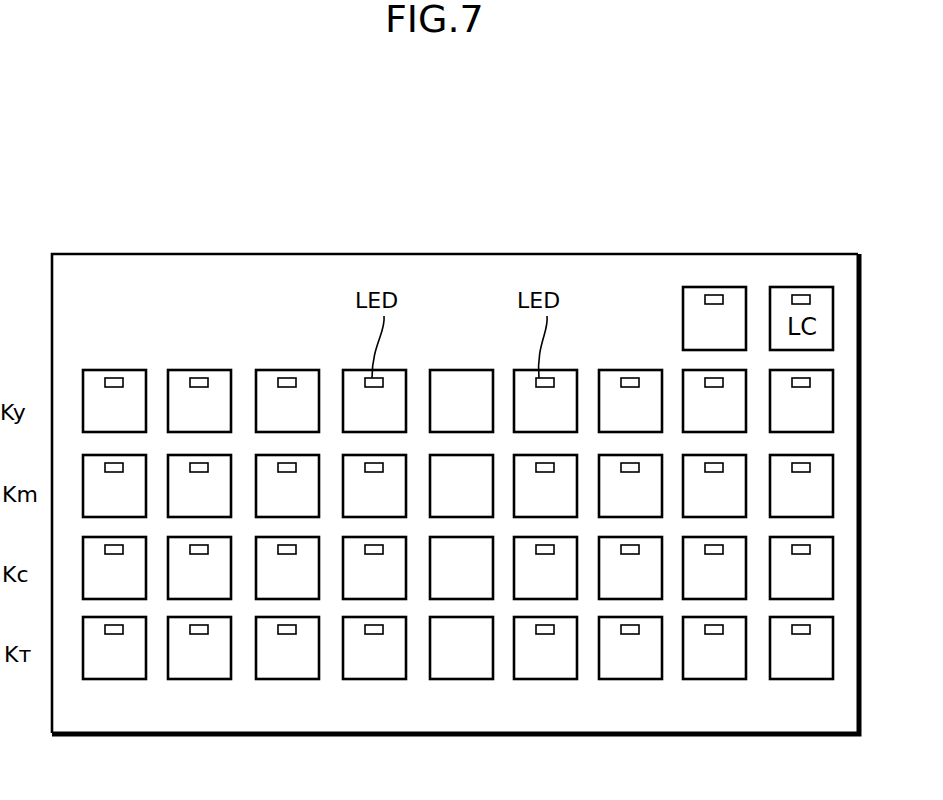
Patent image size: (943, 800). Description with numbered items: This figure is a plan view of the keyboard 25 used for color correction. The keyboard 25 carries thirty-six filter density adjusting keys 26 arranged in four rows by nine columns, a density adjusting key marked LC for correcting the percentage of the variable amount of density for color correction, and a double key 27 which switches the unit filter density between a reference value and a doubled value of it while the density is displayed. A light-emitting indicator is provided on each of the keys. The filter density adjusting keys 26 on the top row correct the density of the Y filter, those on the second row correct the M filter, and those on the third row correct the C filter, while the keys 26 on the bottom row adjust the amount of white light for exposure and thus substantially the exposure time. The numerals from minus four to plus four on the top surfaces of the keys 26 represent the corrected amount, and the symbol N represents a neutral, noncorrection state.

The keyboard 25 is at (735, 240).
The filter density adjusting keys 26 is at (102, 371).
The double key 27 is at (683, 311).